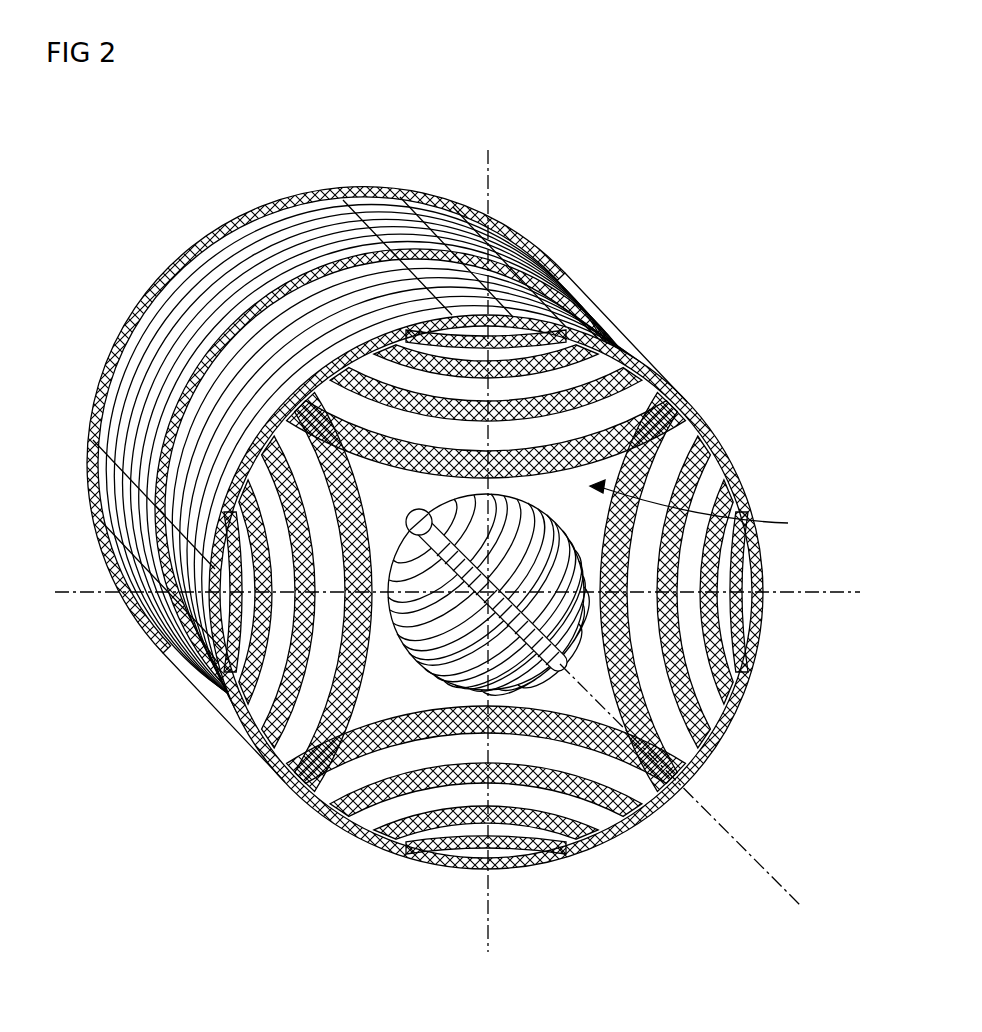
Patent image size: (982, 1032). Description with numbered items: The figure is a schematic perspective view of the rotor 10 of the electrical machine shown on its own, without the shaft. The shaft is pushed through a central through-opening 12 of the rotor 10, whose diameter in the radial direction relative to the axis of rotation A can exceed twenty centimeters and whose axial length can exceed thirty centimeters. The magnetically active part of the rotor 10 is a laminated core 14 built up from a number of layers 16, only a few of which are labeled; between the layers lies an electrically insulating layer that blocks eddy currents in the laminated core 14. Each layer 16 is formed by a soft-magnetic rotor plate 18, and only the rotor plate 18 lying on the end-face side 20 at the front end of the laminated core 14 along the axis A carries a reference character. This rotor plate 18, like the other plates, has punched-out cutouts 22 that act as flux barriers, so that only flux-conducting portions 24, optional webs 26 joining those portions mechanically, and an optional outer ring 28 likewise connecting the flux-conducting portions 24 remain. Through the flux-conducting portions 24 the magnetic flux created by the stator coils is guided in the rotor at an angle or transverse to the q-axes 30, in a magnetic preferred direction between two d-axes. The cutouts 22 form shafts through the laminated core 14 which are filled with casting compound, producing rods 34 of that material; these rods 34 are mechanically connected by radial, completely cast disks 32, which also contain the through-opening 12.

The rotor 10 is at (672, 178).
The through-opening 12 is at (461, 664).
The laminated core 14 is at (230, 238).
The layers 16 is at (293, 238).
The rotor plate 18 is at (728, 466).
The end-face side 20 is at (706, 509).
The cutouts 22 is at (525, 830).
The flux-conducting portions 24 is at (296, 778).
The webs 26 is at (640, 625).
The outer ring 28 is at (548, 283).
The q-axes 30 is at (488, 158).
The disks 32 is at (177, 263).
The rods 34 is at (647, 383).
The axis of rotation A is at (800, 905).